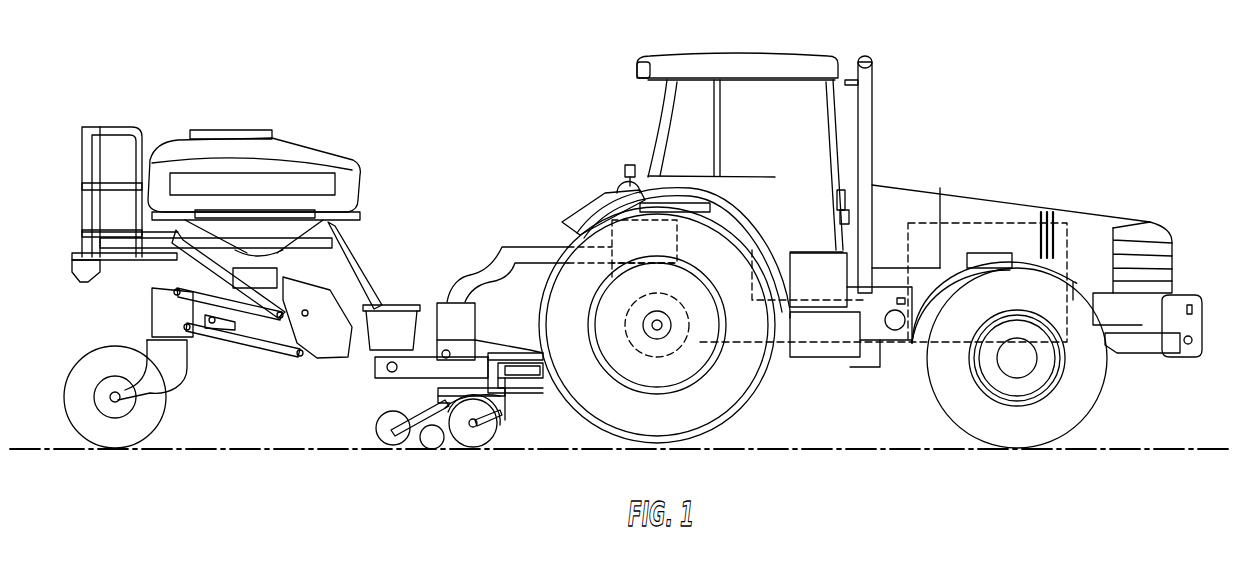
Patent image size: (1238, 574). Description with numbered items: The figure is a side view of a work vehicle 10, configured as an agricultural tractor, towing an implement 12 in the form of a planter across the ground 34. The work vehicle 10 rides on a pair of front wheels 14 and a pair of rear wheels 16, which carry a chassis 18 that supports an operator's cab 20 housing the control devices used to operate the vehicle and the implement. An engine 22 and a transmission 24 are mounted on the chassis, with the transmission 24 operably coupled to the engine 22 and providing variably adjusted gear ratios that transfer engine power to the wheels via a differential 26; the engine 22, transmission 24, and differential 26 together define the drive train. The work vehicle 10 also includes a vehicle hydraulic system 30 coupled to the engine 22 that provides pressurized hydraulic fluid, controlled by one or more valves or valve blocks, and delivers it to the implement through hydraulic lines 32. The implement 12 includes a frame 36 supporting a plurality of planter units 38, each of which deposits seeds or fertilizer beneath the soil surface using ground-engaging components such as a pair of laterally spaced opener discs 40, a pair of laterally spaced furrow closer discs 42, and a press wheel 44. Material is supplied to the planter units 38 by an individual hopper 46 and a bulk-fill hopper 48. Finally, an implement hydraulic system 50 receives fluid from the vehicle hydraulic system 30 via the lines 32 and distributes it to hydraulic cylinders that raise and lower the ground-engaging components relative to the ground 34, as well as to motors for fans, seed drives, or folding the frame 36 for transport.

The work vehicle 10 is at (918, 104).
The implement 12 is at (437, 126).
The front wheels 14 is at (1085, 392).
The rear wheels 16 is at (688, 425).
The chassis 18 is at (897, 355).
The operator's cab 20 is at (775, 58).
The engine 22 is at (1002, 223).
The transmission 24 is at (752, 250).
The differential 26 is at (685, 352).
The vehicle hydraulic system 30 is at (612, 212).
The hydraulic lines 32 is at (537, 263).
The ground 34 is at (235, 447).
The frame 36 is at (515, 353).
The planter units 38 is at (398, 395).
The opener discs 40 is at (474, 447).
The furrow closer discs 42 is at (432, 449).
The press wheel 44 is at (393, 445).
The individual hopper 46 is at (393, 322).
The bulk-fill hopper 48 is at (290, 150).
The implement hydraulic system 50 is at (445, 315).